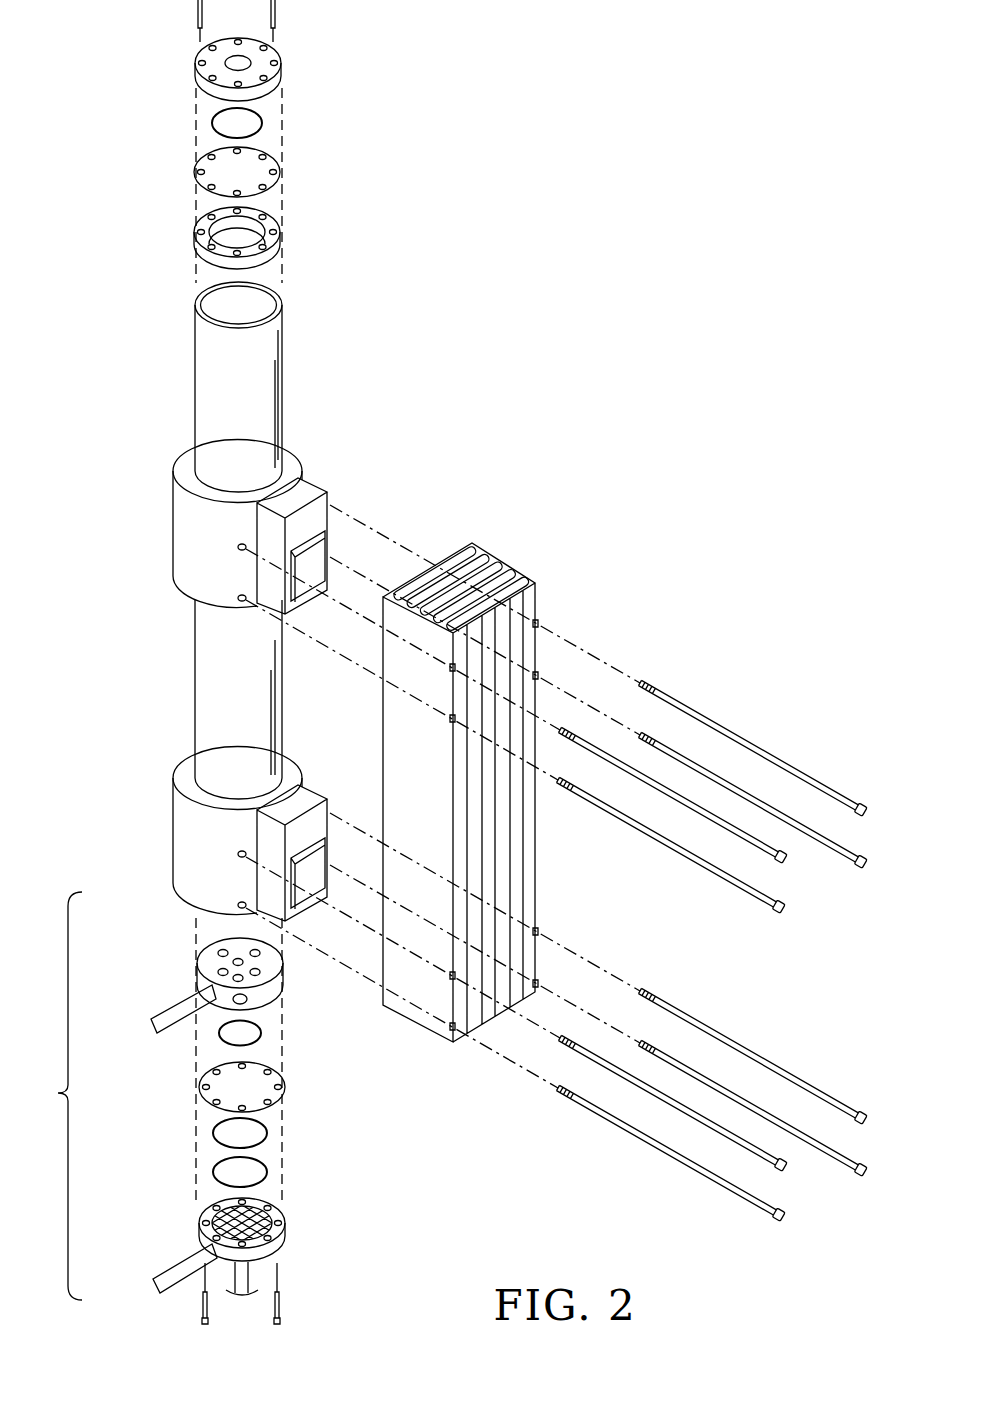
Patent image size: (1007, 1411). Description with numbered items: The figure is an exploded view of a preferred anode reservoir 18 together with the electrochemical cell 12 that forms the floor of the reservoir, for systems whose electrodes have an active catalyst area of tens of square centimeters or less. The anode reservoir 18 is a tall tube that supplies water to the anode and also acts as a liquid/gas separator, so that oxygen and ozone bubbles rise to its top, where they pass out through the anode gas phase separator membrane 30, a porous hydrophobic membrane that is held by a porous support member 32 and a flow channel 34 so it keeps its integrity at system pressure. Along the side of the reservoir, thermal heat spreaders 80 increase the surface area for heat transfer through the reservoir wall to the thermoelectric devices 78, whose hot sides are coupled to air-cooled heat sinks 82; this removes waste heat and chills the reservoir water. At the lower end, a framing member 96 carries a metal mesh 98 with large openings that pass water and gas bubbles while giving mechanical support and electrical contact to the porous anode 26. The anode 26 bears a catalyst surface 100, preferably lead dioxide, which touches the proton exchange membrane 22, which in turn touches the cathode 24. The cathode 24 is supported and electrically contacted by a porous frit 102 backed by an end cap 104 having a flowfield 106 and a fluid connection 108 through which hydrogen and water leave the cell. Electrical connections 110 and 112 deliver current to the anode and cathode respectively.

The electrochemical cell 12 is at (191, 1096).
The anode reservoir 18 is at (195, 355).
The proton exchange membrane 22 is at (284, 1085).
The cathode 24 is at (268, 1130).
The anode 26 is at (260, 1037).
The anode gas phase separator membrane 30 is at (202, 160).
The porous support member 32 is at (212, 122).
The flow channel 34 is at (233, 62).
The thermoelectric device 78 is at (330, 540).
The thermal heat spreader 80 is at (319, 484).
The heat sink 82 is at (492, 553).
The framing member 96 is at (206, 961).
The metal mesh 98 is at (240, 950).
The catalyst surface 100 is at (234, 1050).
The porous frit 102 is at (268, 1170).
The end cap 104 is at (239, 1223).
The flowfield 106 is at (213, 1215).
The fluid connection 108 is at (248, 1283).
The electrical connection 110 is at (160, 1015).
The electrical connection 112 is at (173, 1262).